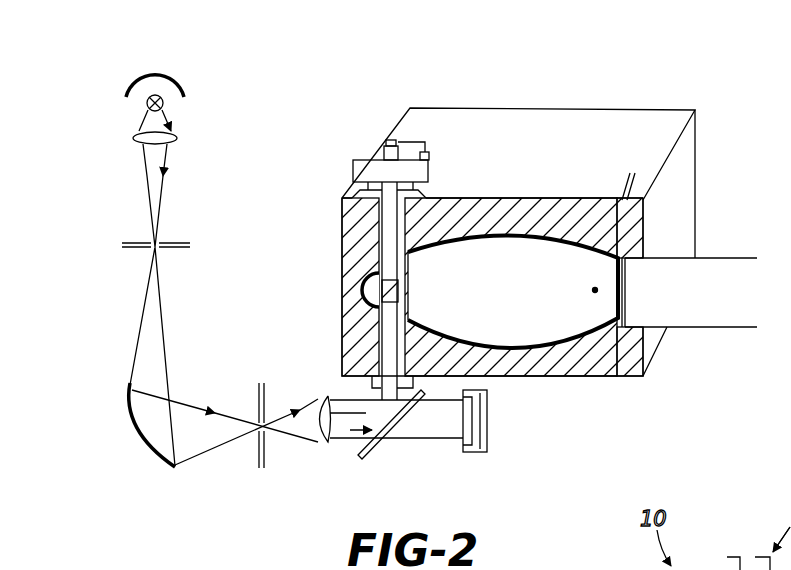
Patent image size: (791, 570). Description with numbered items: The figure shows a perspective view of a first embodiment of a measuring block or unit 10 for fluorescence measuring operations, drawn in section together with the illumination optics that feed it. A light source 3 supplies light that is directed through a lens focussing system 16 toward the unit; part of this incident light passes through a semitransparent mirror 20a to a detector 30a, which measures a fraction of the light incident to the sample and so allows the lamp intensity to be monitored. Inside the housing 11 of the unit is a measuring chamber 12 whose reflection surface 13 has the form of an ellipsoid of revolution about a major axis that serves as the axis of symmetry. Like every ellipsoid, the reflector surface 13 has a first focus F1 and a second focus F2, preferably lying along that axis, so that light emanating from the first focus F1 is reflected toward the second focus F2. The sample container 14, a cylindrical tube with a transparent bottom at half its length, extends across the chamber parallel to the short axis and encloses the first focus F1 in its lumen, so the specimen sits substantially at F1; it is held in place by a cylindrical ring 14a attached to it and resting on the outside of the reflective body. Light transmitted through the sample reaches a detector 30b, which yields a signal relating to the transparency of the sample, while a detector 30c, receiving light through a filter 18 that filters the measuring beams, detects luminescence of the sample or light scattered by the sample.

The light source 3 is at (168, 107).
The measuring block or unit 10 is at (531, 97).
The housing 11 is at (598, 130).
The measuring chamber 12 is at (598, 312).
The reflection surface 13 is at (571, 342).
The sample container 14 is at (390, 227).
The cylindrical ring 14a is at (417, 194).
The lens focussing system 16 is at (295, 462).
The filter 18 is at (625, 285).
The semitransparent mirror 20a is at (373, 441).
The detector 30a is at (487, 415).
The detector 30b is at (362, 168).
The detector 30c is at (691, 292).
The first focus F1 is at (404, 290).
The second focus F2 is at (593, 291).